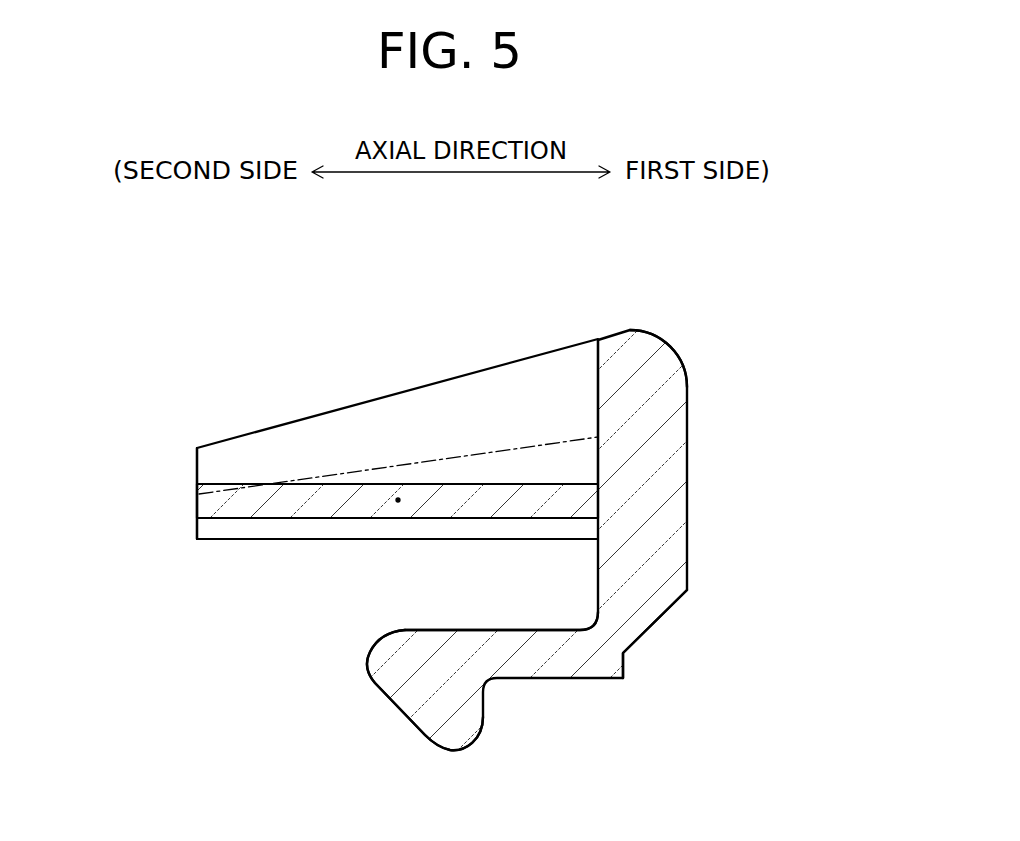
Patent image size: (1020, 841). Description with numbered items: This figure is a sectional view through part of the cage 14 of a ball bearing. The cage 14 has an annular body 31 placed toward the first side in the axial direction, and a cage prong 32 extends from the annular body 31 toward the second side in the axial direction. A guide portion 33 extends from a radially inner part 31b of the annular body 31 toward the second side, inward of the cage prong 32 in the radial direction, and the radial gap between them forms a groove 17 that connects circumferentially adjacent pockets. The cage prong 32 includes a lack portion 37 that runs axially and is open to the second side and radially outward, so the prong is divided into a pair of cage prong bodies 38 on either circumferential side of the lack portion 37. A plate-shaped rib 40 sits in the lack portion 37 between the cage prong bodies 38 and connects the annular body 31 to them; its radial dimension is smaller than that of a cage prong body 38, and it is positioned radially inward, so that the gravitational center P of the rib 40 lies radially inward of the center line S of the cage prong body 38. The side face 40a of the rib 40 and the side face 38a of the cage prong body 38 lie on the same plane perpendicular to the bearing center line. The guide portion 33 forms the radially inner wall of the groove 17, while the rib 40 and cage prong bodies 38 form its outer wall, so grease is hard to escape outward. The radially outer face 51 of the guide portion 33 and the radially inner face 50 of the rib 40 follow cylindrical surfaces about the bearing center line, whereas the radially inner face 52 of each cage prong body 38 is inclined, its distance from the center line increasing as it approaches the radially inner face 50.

The cage 14 is at (692, 352).
The groove 17 is at (390, 617).
The annular body 31 is at (687, 468).
The radially inner part 31b is at (613, 665).
The cage prong 32 is at (186, 447).
The guide portion 33 is at (392, 713).
The lack portion 37 is at (569, 369).
The cage prong body 38 is at (298, 440).
The side face of cage prong body 38a is at (197, 467).
The rib 40 is at (345, 492).
The side face of rib 40a is at (197, 503).
The radially inner face of rib 50 is at (452, 518).
The radially outer face of guide portion 51 is at (492, 630).
The radially inner face of cage prong body 52 is at (542, 539).
The gravitational center of rib P is at (398, 500).
The center line of cage prong body S is at (432, 461).